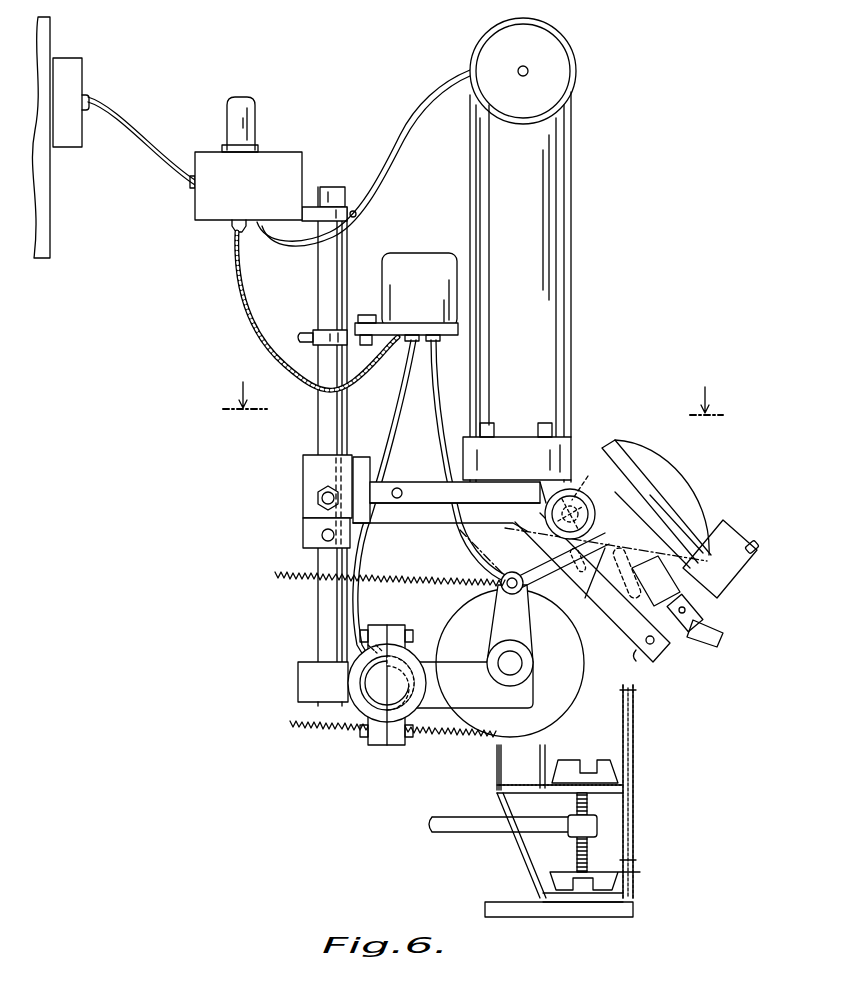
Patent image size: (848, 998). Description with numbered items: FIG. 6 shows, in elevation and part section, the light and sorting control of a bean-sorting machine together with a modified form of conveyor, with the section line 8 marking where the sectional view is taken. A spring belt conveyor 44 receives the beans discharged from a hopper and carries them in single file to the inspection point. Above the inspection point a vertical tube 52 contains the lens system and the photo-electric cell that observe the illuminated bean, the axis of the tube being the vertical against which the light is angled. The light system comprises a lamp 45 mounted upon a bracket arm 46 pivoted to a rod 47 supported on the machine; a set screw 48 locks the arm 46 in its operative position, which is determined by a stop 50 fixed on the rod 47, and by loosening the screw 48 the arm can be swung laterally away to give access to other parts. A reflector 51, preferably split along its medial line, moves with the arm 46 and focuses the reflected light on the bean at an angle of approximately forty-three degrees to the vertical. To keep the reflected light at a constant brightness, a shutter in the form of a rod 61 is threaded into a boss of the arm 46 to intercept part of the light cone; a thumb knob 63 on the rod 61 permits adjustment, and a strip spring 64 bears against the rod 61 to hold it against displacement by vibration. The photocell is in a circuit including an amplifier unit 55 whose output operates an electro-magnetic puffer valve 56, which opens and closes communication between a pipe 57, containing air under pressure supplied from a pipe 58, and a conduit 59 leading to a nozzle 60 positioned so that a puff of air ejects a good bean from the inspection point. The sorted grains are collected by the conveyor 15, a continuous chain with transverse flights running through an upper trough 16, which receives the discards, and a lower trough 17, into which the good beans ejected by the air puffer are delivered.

The section line 8— 8 is at (469, 399).
The conveyor 15 is at (566, 766).
The upper trough 16 is at (621, 723).
The lower trough 17 is at (618, 854).
The spring belt conveyor 44 is at (281, 576).
The lamp 45 is at (698, 552).
The bracket arm 46 is at (632, 636).
The rod 47 is at (318, 436).
The set screw 48 is at (318, 499).
The stop 50 is at (395, 483).
The reflector 51 is at (668, 474).
The tube 52 is at (566, 360).
The amplifier unit 55 is at (300, 164).
The electro-magnetic puffer valve 56 is at (411, 262).
The pipe 57 is at (398, 408).
The pipe 58 is at (402, 684).
The conduit 59 is at (446, 404).
The nozzle 60 is at (524, 581).
The rod 61 is at (597, 461).
The thumb knob 63 is at (548, 502).
The strip spring 64 is at (588, 604).